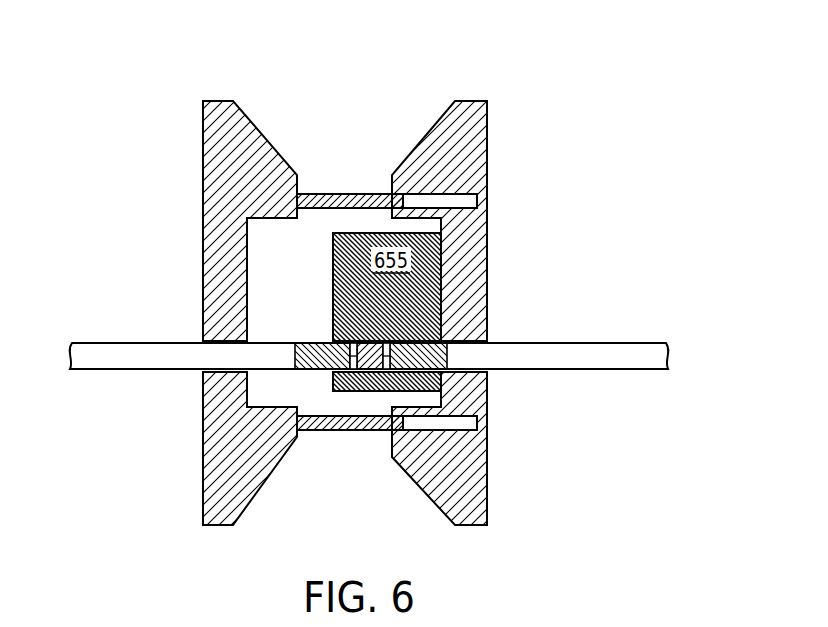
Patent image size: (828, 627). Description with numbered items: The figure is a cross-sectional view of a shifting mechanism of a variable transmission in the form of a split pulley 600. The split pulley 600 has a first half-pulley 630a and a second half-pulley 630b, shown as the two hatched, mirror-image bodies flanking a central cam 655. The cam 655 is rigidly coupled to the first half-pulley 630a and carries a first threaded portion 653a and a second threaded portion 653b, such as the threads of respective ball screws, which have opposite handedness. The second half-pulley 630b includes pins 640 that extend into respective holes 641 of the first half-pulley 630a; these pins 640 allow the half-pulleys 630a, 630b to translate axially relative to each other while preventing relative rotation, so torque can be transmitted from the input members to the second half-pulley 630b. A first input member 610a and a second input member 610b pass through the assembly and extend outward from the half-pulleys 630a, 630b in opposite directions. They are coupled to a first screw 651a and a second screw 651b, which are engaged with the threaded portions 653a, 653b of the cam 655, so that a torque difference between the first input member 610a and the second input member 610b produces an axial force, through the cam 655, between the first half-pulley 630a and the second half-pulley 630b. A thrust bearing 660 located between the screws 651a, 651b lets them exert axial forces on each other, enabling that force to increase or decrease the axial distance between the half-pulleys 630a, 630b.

The split pulley 600 is at (573, 160).
The first half-pulley 630a is at (468, 100).
The second half-pulley 630b is at (218, 100).
The pins 640 is at (306, 201).
The holes 641 is at (455, 193).
The first threaded portion 653a is at (410, 322).
The second threaded portion 653b is at (351, 328).
The cam 655 is at (410, 273).
The first input member 610a is at (612, 353).
The second input member 610b is at (185, 362).
The first screw 651a is at (437, 380).
The second screw 651b is at (345, 350).
The thrust bearing 660 is at (357, 390).